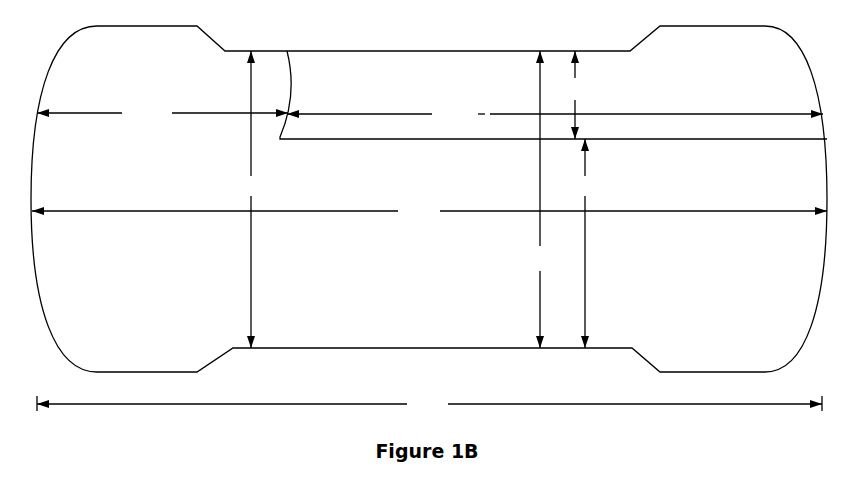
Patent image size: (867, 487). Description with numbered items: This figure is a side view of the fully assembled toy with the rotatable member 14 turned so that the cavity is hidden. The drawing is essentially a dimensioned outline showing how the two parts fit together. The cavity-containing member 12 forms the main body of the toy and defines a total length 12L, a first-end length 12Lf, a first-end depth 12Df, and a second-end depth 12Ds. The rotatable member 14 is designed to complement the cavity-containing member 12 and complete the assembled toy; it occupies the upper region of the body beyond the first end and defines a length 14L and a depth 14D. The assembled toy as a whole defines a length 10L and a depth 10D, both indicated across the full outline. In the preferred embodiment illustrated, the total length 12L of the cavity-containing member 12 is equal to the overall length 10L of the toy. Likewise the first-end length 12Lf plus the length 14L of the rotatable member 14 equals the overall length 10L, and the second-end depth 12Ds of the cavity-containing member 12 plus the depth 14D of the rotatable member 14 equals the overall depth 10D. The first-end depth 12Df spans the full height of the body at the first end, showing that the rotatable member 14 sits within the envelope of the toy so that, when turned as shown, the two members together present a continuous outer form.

The cavity-containing member 12 is at (429, 199).
The rotatable member 14 is at (553, 95).
The first-end length 12Lf is at (162, 113).
The length of the rotatable member 14L is at (555, 114).
The total length 12L is at (429, 211).
The length of the fully assembled toy 10L is at (429, 404).
The first-end depth 12Df is at (249, 199).
The depth of the fully assembled toy 10D is at (540, 199).
The depth of the rotatable member 14D is at (577, 95).
The second-end depth 12Ds is at (586, 243).